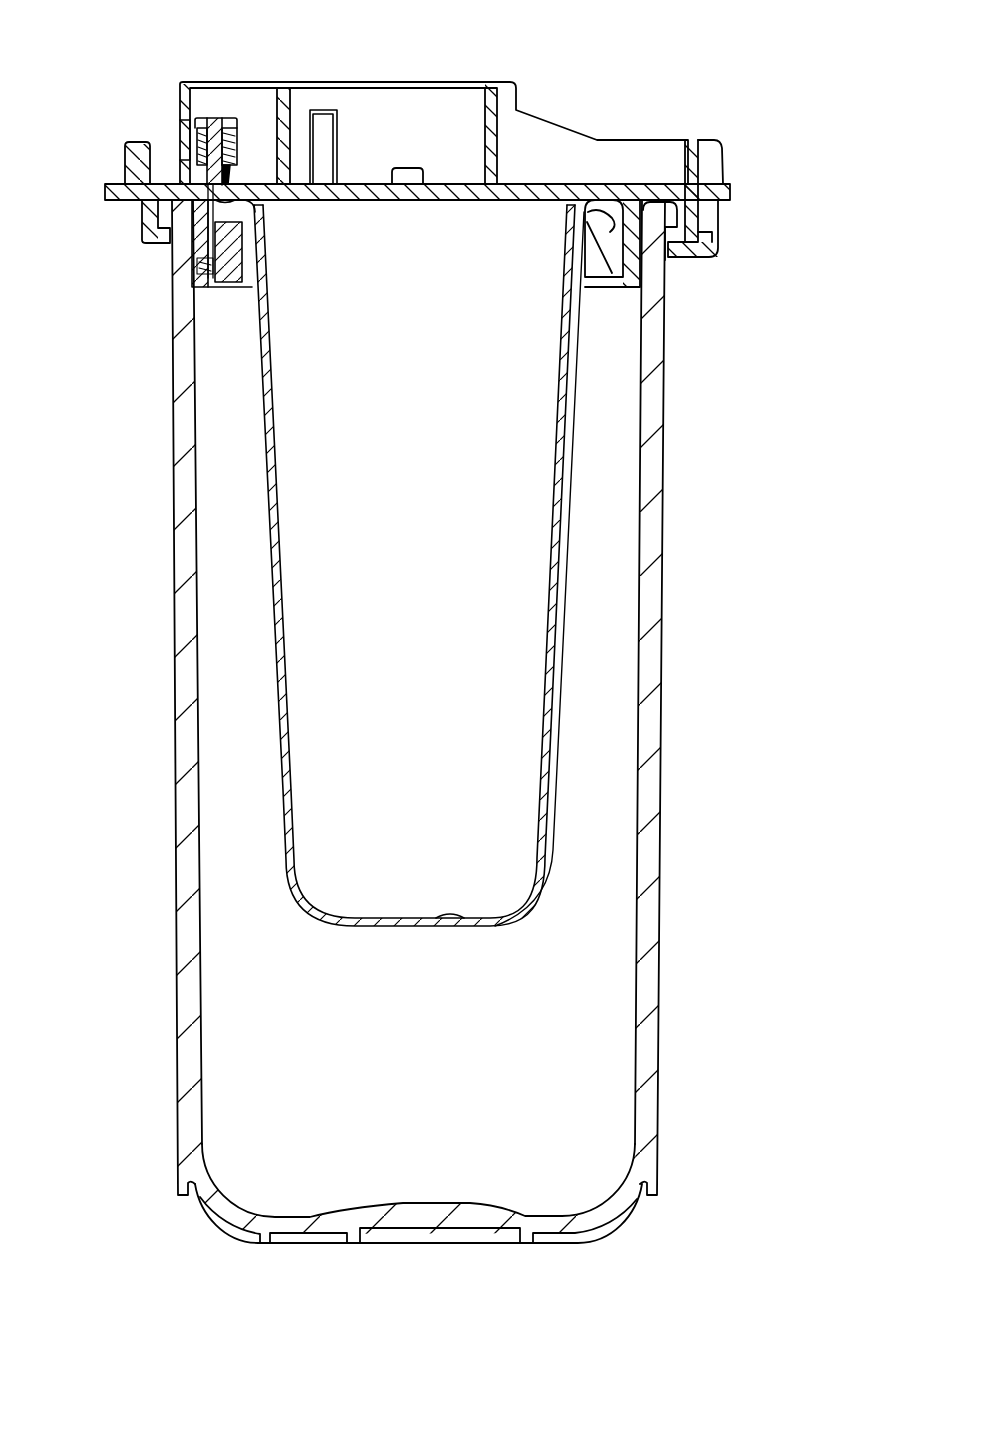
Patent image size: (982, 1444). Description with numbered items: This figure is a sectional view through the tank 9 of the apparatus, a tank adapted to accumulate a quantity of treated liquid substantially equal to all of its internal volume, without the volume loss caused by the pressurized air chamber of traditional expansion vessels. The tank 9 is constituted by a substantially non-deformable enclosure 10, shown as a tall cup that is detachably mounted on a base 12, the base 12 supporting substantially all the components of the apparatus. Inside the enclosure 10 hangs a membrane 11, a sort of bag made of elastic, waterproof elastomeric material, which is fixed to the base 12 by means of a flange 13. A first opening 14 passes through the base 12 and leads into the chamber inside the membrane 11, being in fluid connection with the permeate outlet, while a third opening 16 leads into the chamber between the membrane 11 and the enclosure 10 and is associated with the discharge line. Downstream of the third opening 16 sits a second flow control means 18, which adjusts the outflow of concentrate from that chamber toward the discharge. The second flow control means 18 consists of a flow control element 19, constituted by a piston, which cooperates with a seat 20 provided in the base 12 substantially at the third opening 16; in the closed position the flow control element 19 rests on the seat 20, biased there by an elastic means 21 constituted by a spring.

The tank 9 is at (755, 648).
The enclosure 10 is at (647, 762).
The membrane 11 is at (497, 925).
The base 12 is at (503, 200).
The flange 13 is at (232, 282).
The first opening 14 is at (303, 190).
The third opening 16 is at (175, 198).
The second flow control means 18 is at (214, 92).
The flow control element 19 is at (198, 164).
The seat 20 is at (229, 163).
The elastic means 21 is at (190, 142).